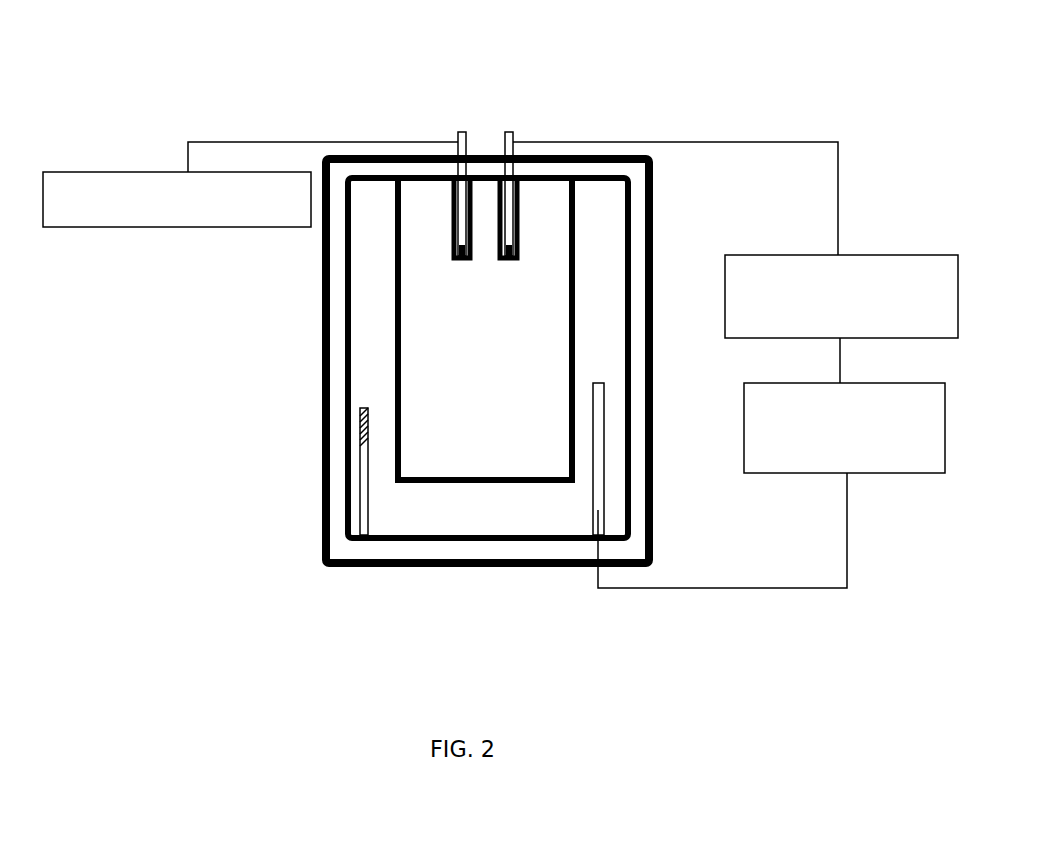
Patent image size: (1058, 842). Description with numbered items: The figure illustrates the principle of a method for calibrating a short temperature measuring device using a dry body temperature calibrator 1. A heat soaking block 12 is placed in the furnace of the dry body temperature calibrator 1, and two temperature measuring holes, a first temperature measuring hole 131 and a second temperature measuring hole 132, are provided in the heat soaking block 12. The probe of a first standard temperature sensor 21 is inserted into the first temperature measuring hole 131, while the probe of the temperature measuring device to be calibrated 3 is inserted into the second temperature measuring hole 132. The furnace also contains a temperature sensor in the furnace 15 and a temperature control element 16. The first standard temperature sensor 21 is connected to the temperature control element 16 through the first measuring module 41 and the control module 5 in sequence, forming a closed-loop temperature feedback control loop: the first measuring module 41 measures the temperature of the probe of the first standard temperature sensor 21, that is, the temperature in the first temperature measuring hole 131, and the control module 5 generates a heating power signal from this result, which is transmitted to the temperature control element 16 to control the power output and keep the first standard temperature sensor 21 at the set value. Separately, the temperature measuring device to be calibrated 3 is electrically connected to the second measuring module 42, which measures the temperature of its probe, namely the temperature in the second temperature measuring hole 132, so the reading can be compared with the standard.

The dry body temperature calibrator 1 is at (337, 563).
The heat soaking block 12 is at (467, 308).
The first temperature measuring hole 131 is at (518, 241).
The second temperature measuring hole 132 is at (451, 203).
The temperature measuring device to be calibrated 3 is at (458, 132).
The first standard temperature sensor 21 is at (513, 132).
The temperature sensor in the furnace 15 is at (370, 442).
The temperature control element 16 is at (605, 473).
The first measuring module 41 is at (735, 240).
The second measuring module 42 is at (250, 184).
The control module 5 is at (844, 405).